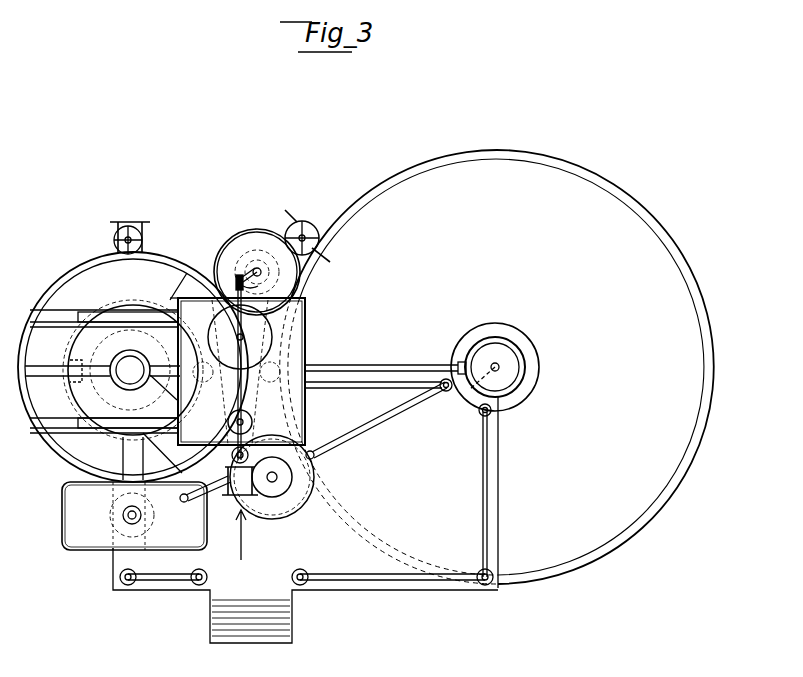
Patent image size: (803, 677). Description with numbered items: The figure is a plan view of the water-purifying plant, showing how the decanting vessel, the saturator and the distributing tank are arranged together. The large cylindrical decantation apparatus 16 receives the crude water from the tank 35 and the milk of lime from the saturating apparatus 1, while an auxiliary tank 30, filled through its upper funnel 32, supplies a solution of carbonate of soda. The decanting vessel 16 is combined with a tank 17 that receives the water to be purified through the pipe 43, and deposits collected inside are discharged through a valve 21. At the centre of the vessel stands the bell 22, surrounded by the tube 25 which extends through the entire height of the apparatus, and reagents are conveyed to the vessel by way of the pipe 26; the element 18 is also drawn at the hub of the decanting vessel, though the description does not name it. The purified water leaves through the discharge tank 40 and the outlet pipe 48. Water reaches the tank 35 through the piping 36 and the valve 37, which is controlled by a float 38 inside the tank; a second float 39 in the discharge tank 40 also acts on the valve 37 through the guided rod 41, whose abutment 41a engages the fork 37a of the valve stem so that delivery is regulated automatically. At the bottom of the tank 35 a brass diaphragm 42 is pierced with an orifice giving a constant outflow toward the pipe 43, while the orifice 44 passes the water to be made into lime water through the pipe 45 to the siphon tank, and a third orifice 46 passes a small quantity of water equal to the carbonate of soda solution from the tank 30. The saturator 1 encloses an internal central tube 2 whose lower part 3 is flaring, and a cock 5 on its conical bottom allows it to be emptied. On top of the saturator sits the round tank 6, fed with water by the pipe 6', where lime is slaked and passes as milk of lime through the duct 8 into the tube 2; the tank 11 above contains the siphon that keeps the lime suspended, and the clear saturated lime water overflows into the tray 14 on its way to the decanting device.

The saturating apparatus 1 is at (52, 290).
The internal central tube 2 is at (112, 389).
The lower part of central tube 3 is at (100, 350).
The cock 5 is at (132, 222).
The round tank 6 is at (116, 516).
The pipe 6' is at (205, 501).
The duct 8 is at (125, 457).
The tank 11 is at (138, 362).
The tray 14 is at (66, 400).
The cylindrical decantation apparatus 16 is at (385, 184).
The tank 17 is at (490, 345).
The bearing block 18 is at (458, 366).
The valve 21 is at (296, 220).
The bell 22 is at (515, 393).
The tube 25 is at (538, 341).
The pipe 26 is at (372, 434).
The auxiliary tank 30 is at (310, 490).
The upper funnel 32 is at (278, 490).
The tank 35 is at (305, 412).
The piping 36 is at (246, 490).
The valve 37 is at (253, 420).
The fork 37a is at (234, 276).
The float 38 is at (267, 320).
The second float 39 is at (235, 245).
The discharge tank 40 is at (257, 229).
The guided rod 41 is at (238, 270).
The abutment 41a is at (262, 288).
The brass diaphragm 42 is at (282, 365).
The pipe 43 is at (382, 372).
The orifice 44 is at (215, 370).
The pipe 45 is at (165, 373).
The third orifice 46 is at (236, 372).
The outlet pipe 48 is at (262, 273).